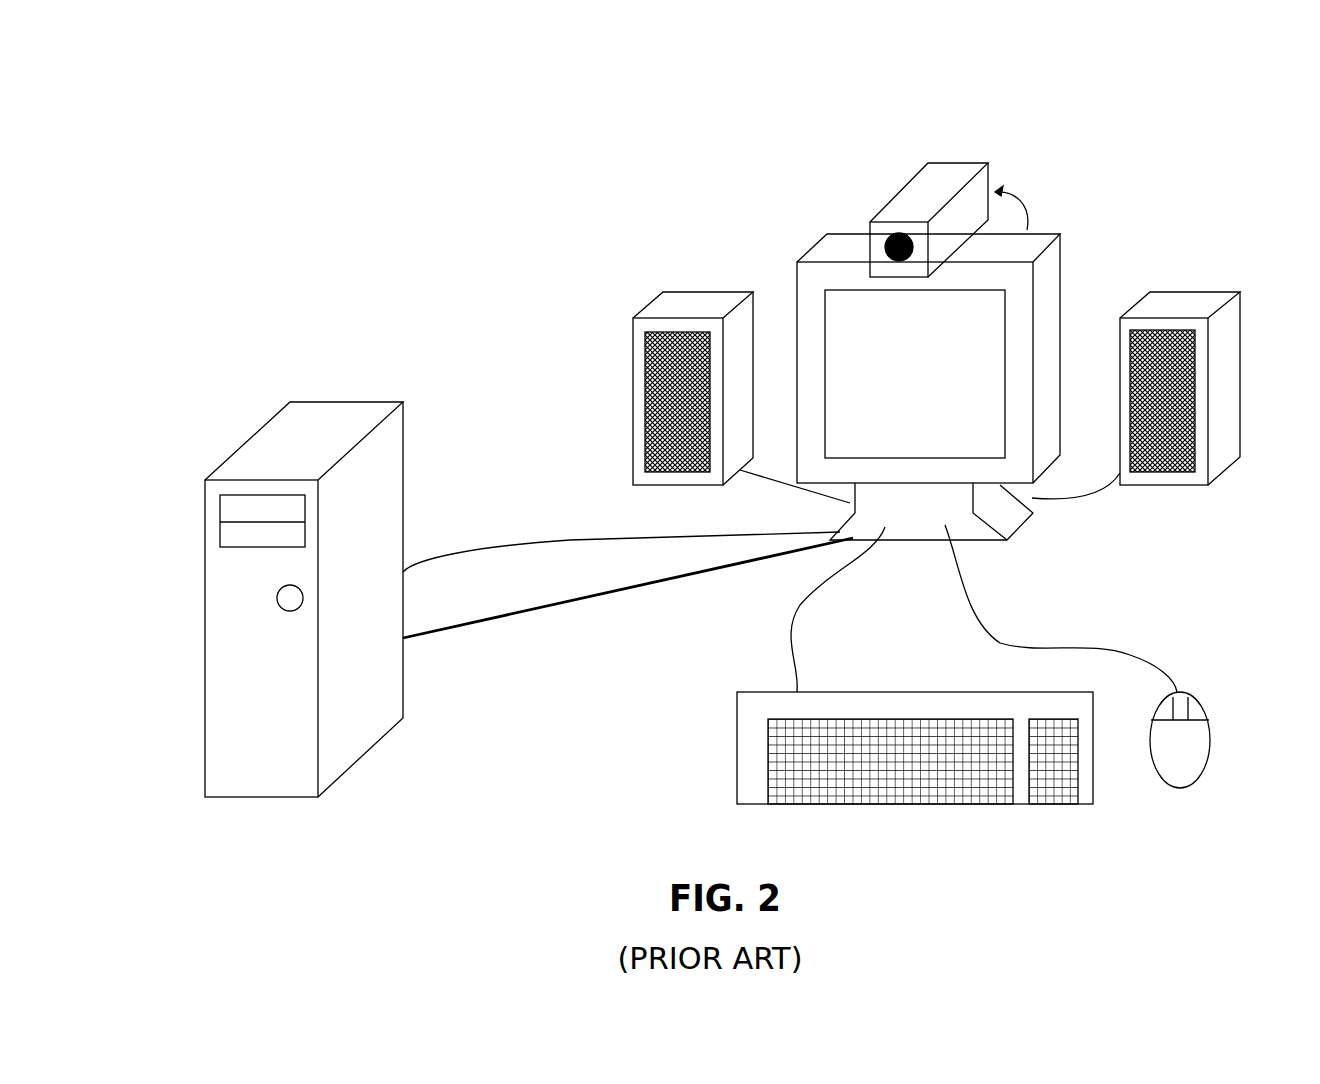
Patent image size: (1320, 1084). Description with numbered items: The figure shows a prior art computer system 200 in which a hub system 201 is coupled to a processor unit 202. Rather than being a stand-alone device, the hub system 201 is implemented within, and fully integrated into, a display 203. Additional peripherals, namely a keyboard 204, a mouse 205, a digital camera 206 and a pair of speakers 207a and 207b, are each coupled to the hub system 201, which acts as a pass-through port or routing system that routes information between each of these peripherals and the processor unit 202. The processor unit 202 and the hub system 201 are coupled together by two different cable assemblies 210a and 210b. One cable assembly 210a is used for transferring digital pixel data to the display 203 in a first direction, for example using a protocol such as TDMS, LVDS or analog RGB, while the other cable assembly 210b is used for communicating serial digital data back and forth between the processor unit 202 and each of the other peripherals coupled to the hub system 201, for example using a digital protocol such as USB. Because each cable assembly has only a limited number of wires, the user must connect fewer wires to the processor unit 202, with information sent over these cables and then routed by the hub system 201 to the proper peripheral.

The computer system 200 is at (528, 167).
The hub system 201 is at (917, 525).
The processor unit 202 is at (333, 425).
The display 203 is at (1043, 297).
The keyboard 204 is at (757, 752).
The mouse 205 is at (1192, 750).
The digital camera 206 is at (948, 180).
The speaker 207a is at (1173, 297).
The speaker 207b is at (693, 297).
The cable assembly 210a is at (538, 540).
The cable assembly 210b is at (563, 607).